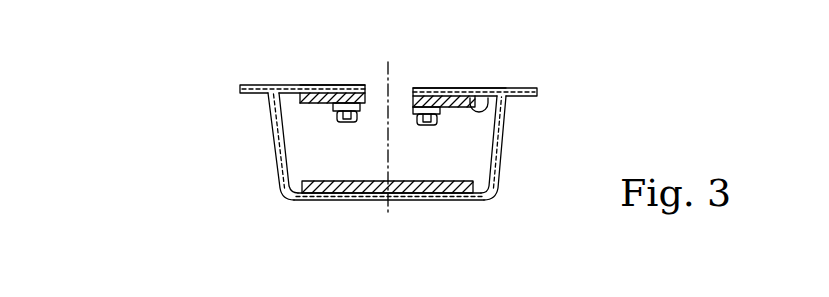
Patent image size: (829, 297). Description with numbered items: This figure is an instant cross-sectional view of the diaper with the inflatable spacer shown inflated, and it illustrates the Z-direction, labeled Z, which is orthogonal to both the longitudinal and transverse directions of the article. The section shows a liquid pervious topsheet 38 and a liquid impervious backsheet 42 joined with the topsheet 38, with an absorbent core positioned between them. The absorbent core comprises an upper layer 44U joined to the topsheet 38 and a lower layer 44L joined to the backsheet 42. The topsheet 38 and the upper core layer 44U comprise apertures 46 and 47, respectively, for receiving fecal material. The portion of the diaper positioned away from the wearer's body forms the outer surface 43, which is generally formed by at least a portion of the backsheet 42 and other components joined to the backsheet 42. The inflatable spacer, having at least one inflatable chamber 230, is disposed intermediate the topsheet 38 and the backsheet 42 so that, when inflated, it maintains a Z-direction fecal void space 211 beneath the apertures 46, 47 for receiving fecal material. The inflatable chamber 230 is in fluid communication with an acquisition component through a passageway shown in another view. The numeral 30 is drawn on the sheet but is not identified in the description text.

The mounting flange 30 is at (240, 87).
The topsheet 38 is at (329, 86).
The outer surface 43 is at (297, 200).
The backsheet 42 is at (330, 201).
The lower layer 44L is at (477, 200).
The upper layer 44U is at (485, 96).
The aperture 46 is at (365, 95).
The aperture 47 is at (416, 97).
The inflatable chamber 230 is at (349, 124).
The Z-direction fecal void space 211 is at (358, 165).
The Z-direction Z is at (389, 68).